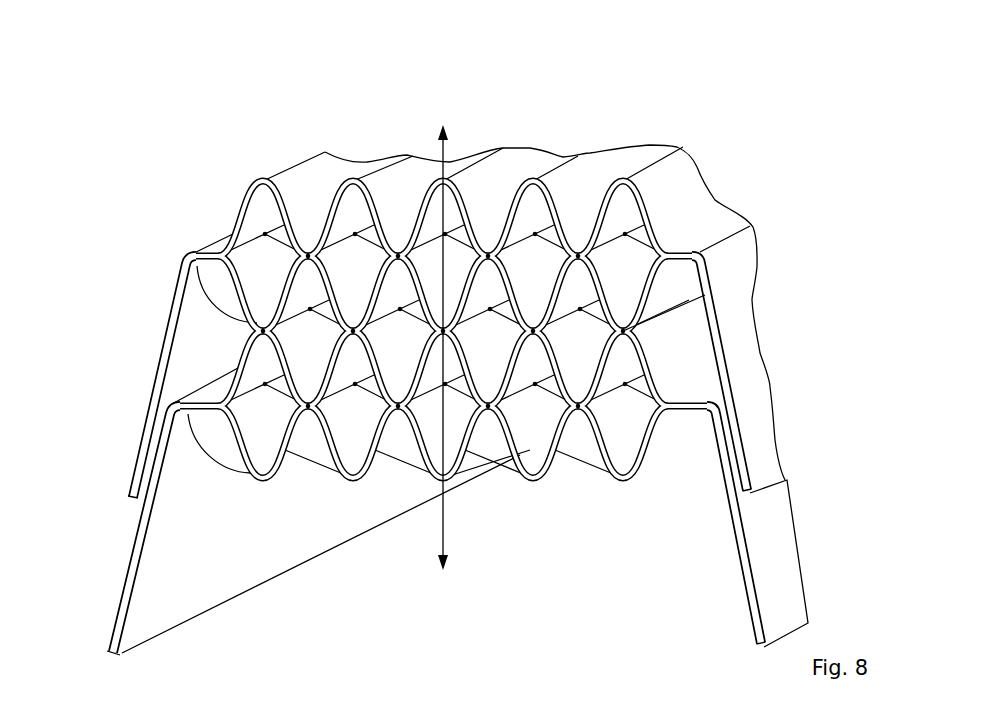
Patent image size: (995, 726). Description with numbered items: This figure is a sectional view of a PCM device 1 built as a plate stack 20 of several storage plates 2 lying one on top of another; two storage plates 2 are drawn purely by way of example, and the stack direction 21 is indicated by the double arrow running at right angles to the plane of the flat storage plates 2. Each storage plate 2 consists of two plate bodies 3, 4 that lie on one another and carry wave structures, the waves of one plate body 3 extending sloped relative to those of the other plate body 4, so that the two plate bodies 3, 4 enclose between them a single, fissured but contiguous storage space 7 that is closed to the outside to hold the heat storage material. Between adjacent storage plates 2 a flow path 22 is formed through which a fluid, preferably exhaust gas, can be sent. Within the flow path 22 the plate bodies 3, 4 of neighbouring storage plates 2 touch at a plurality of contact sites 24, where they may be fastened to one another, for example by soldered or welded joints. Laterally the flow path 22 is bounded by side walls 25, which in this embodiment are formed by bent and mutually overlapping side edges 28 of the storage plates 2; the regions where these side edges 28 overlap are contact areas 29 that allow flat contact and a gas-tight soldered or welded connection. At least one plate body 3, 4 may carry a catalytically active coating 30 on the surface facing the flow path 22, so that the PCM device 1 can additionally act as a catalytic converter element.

The PCM device 1 is at (812, 190).
The storage plate 2 is at (679, 170).
The plate body 3 is at (244, 213).
The plate body 4 is at (218, 293).
The storage space 7 is at (348, 281).
The plate stack 20 is at (232, 142).
The stack direction 21 is at (448, 532).
The flow path 22 is at (197, 353).
The contact sites 24 is at (257, 325).
The side walls 25 is at (166, 323).
The side edges 28 is at (152, 400).
The contact areas 29 is at (160, 473).
The catalytically active coating 30 is at (640, 292).